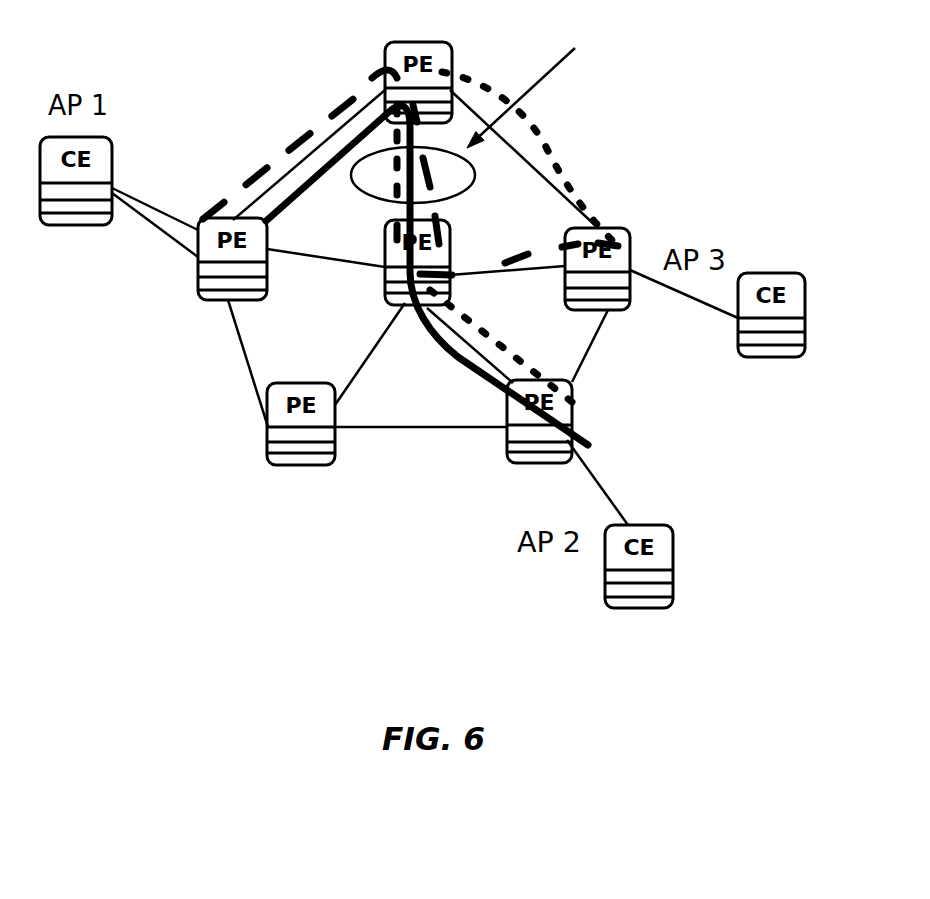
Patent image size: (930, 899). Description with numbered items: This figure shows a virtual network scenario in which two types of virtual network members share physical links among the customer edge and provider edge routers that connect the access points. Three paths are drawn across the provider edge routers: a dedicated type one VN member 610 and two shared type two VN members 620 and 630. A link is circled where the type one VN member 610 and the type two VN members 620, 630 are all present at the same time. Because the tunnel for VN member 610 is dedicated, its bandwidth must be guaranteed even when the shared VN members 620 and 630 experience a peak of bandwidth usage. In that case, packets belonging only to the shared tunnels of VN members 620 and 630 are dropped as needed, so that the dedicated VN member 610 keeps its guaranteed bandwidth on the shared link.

The type 1 VN member 610 is at (556, 158).
The type 2 VN member 620 is at (298, 140).
The type 2 VN member 630 is at (299, 202).